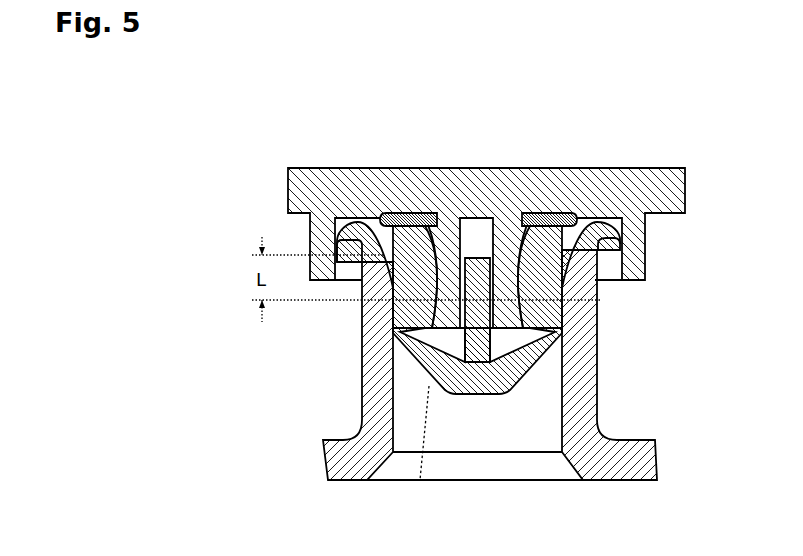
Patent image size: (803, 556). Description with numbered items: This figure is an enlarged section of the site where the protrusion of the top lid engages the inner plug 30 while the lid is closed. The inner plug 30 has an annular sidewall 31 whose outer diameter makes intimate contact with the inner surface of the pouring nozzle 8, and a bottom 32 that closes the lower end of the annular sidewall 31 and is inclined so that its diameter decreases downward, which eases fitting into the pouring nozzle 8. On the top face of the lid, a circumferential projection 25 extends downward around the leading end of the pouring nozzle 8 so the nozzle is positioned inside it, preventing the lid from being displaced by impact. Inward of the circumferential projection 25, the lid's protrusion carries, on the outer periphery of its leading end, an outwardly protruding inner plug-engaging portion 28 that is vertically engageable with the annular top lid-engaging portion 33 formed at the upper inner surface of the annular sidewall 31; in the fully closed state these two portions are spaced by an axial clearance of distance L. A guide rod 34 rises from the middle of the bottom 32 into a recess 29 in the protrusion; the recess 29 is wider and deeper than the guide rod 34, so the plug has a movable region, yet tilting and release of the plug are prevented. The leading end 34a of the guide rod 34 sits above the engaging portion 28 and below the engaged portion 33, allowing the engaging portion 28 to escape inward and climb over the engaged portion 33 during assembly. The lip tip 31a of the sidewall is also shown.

The pouring nozzle 8 is at (360, 405).
The circumferential projection 25 is at (647, 245).
The inner plug-engaging portion 28 is at (391, 327).
The recess 29 is at (477, 237).
The inner plug 30 is at (490, 342).
The annular sidewall 31 is at (552, 295).
The lip tip 31a is at (403, 222).
The bottom 32 is at (420, 480).
The top lid-engaging portion 33 is at (442, 237).
The guide rod 34 is at (545, 355).
The leading end 34a is at (516, 226).